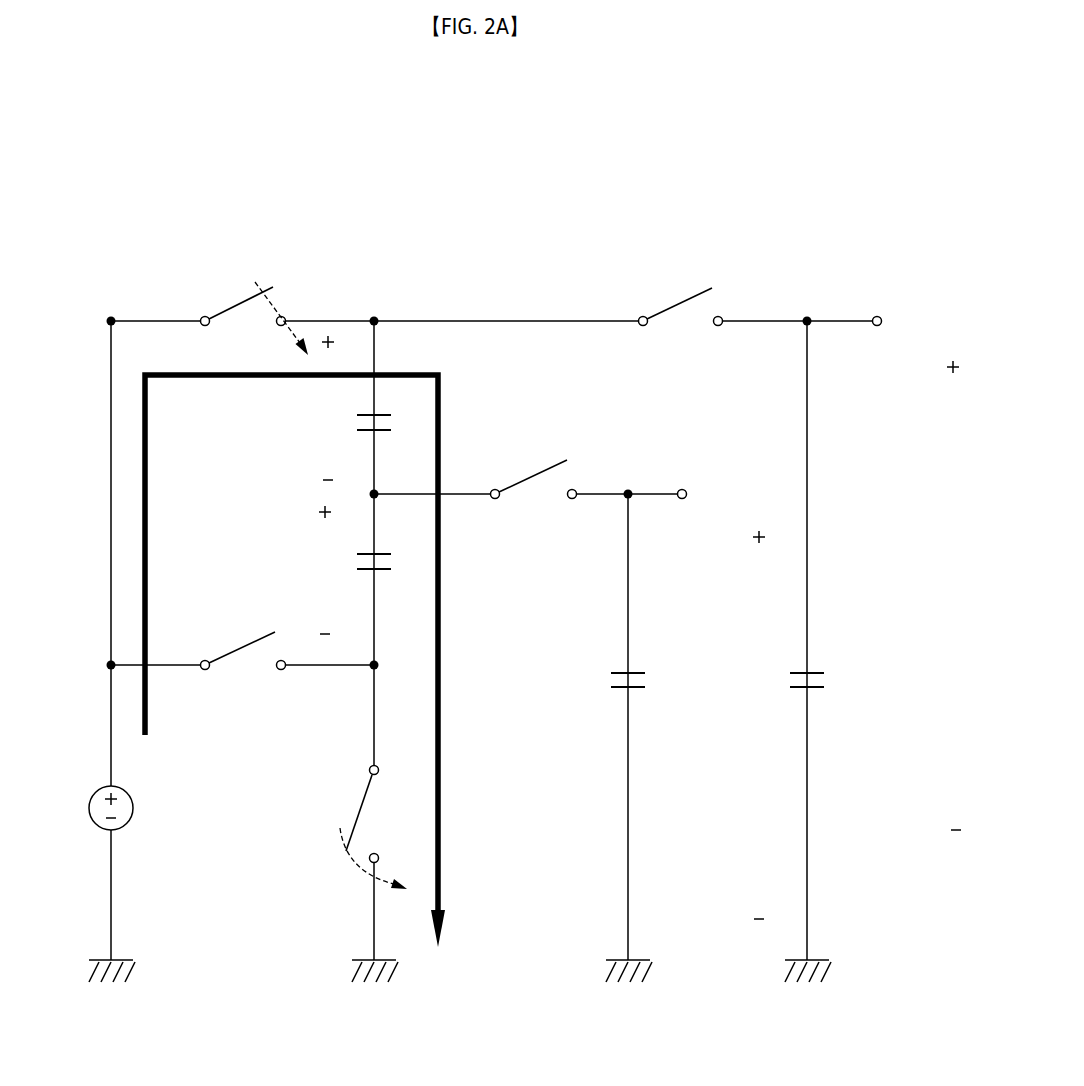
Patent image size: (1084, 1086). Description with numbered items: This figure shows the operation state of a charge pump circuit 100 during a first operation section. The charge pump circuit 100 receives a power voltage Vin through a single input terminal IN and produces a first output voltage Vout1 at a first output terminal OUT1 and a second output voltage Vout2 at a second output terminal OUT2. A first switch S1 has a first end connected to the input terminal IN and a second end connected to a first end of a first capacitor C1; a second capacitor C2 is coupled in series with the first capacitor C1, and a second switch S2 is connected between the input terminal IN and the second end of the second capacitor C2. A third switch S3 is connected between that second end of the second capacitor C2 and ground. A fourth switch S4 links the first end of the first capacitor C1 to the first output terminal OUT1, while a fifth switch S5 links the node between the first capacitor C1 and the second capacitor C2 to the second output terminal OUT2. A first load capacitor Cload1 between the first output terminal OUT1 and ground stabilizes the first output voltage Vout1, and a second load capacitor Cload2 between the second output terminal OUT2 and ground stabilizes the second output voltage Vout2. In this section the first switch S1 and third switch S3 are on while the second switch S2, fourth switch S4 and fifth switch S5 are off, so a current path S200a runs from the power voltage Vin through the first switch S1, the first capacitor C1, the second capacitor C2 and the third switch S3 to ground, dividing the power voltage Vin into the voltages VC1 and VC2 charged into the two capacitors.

The charge pump circuit 100 is at (527, 123).
The first switch S1 is at (252, 298).
The second switch S2 is at (247, 627).
The third switch S3 is at (339, 828).
The fourth switch S4 is at (679, 286).
The fifth switch S5 is at (532, 459).
The first capacitor C1 is at (392, 422).
The second capacitor C2 is at (392, 566).
The voltage charged into the first capacitor VC1 is at (330, 408).
The voltage charged into the second capacitor VC2 is at (330, 570).
The first load capacitor Cload1 is at (848, 684).
The second load capacitor Cload2 is at (667, 684).
The first output voltage Vout1 is at (935, 595).
The second output voltage Vout2 is at (754, 725).
The first output terminal OUT1 is at (912, 321).
The second output terminal OUT2 is at (718, 494).
The input terminal IN is at (107, 665).
The power voltage Vin is at (89, 808).
The current path S200a is at (441, 720).